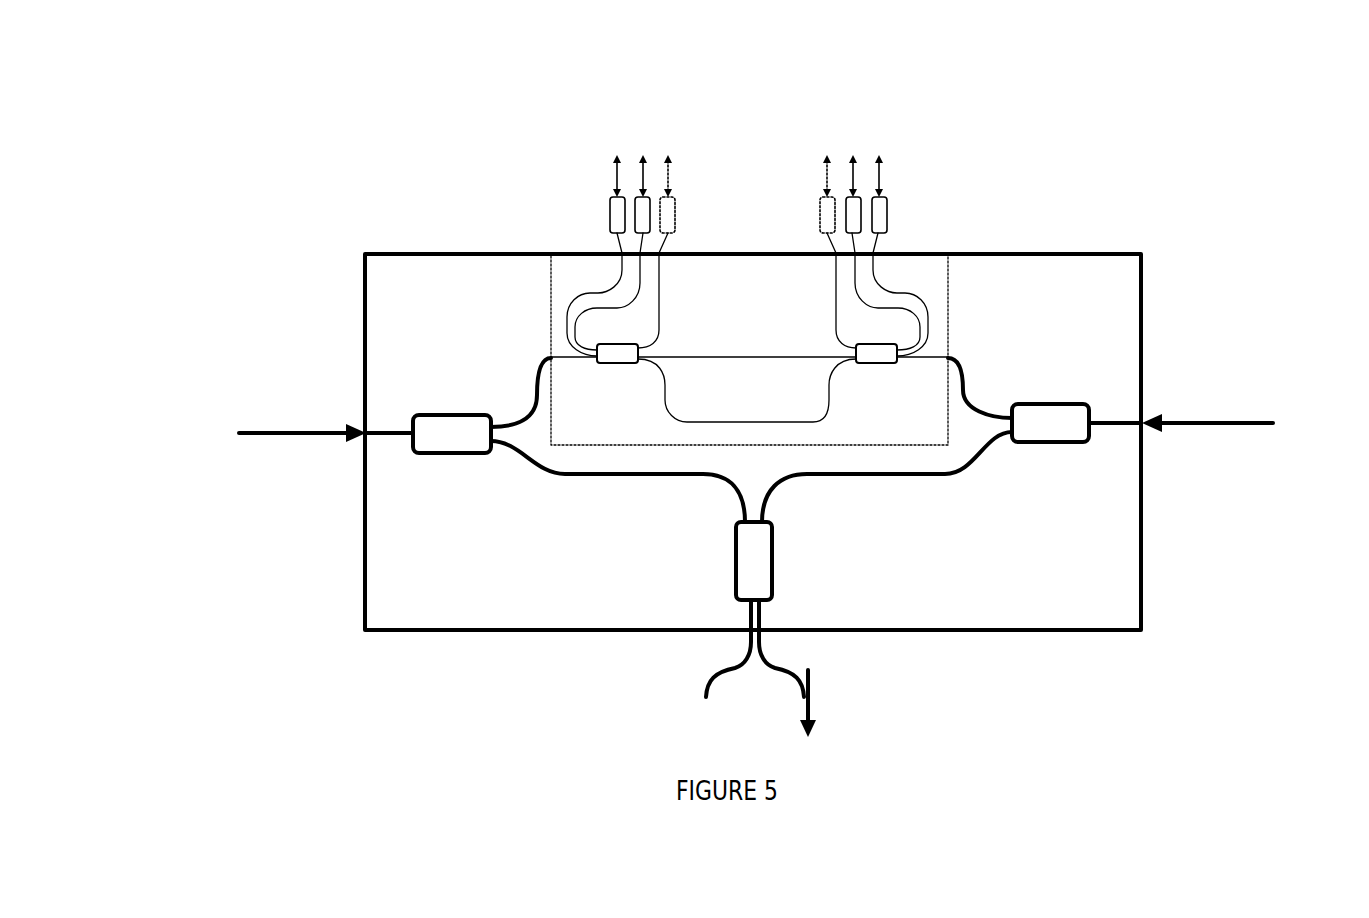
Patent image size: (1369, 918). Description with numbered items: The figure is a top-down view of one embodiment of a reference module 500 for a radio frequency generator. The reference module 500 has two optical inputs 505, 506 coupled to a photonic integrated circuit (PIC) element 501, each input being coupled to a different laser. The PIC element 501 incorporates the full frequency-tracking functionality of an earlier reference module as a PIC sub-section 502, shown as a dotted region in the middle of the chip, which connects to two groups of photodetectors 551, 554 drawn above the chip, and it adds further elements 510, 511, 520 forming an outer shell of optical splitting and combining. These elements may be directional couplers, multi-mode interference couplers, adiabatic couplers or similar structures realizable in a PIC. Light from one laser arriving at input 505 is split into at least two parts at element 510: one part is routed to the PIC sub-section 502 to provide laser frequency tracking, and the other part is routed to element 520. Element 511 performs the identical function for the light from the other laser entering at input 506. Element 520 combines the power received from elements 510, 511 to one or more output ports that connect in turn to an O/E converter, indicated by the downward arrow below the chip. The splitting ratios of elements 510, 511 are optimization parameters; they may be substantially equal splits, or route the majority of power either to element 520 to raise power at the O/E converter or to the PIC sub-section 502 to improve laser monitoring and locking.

The reference module 500 is at (267, 77).
The photonic integrated circuit element 501 is at (365, 273).
The PIC sub-section 502 is at (551, 283).
The optical input 505 is at (290, 430).
The optical input 506 is at (1238, 418).
The splitting element 510 is at (438, 453).
The splitting element 511 is at (1053, 442).
The combining element 520 is at (737, 590).
The group of photodetectors 551 is at (675, 137).
The group of photodetectors 554 is at (888, 137).